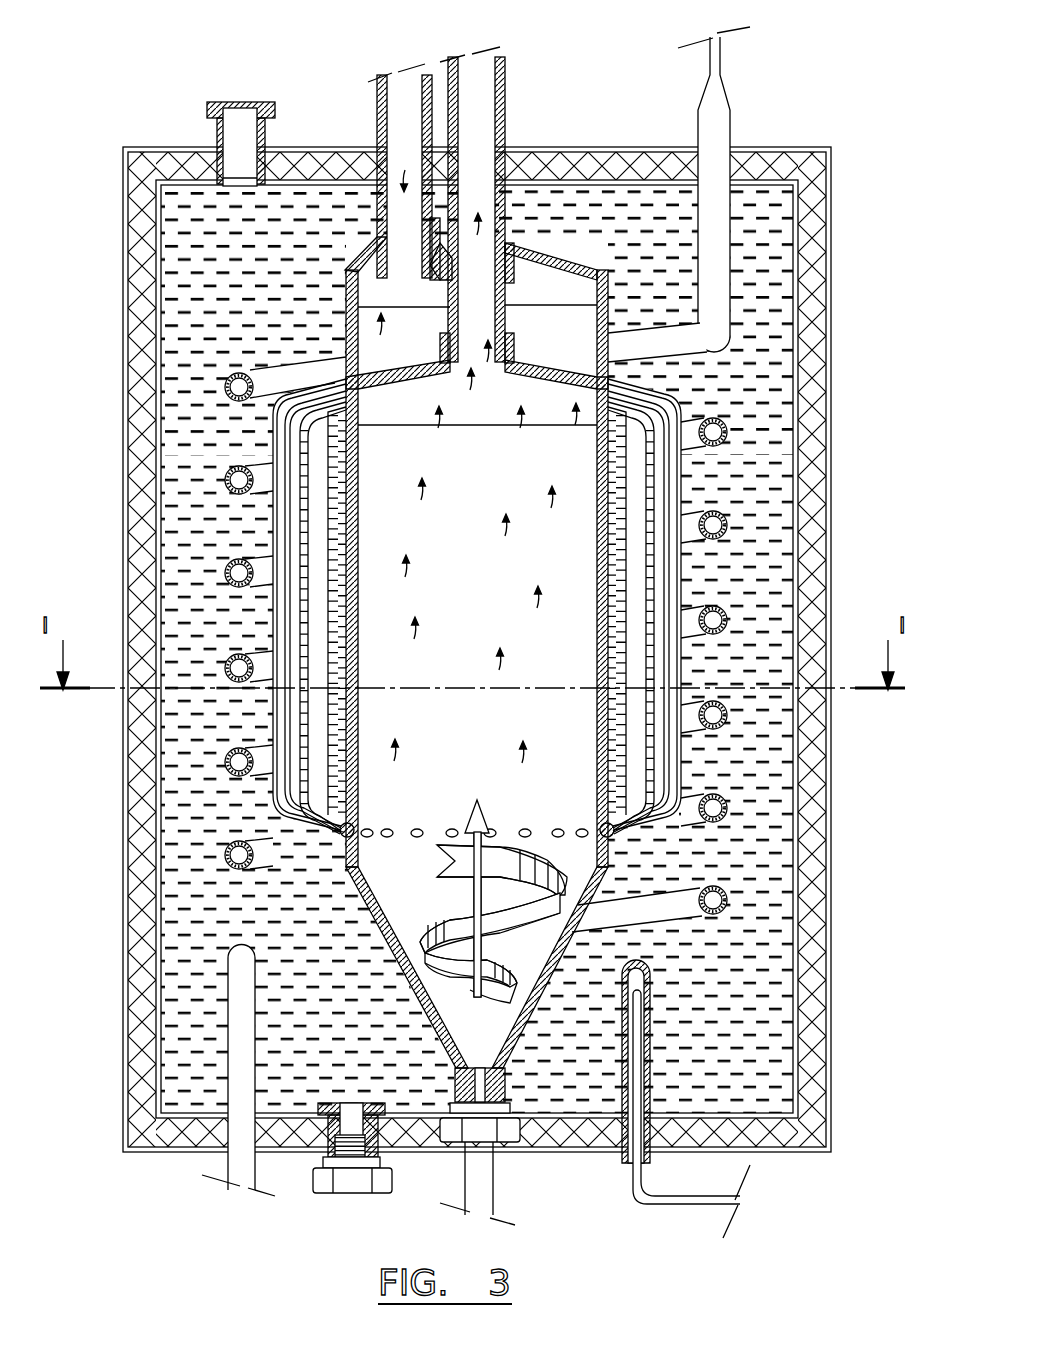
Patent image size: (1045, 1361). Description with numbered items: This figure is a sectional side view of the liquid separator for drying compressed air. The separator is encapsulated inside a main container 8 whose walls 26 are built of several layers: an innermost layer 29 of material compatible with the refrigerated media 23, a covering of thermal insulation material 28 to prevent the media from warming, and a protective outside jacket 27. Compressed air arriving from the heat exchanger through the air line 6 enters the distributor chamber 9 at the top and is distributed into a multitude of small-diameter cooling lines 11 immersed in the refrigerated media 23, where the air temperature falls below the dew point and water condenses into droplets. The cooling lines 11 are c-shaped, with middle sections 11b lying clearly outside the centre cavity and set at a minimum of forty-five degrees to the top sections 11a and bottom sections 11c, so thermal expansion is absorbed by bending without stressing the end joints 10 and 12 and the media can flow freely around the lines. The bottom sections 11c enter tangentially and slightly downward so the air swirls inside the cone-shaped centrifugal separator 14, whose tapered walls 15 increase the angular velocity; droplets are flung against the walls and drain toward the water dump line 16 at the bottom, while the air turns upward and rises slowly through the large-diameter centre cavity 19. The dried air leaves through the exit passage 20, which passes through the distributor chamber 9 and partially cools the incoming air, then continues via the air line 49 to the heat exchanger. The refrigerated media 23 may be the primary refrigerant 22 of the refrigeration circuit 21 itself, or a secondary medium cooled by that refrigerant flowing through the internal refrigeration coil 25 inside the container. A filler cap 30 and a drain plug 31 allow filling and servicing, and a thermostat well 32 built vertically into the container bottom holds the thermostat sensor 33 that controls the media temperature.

The air line 6 is at (397, 87).
The main container 8 is at (438, 629).
The distributor chamber 9 is at (412, 347).
The end joint 10 is at (369, 660).
The cooling lines 11 is at (283, 523).
The top section of cooling lines 11a is at (290, 396).
The middle section of cooling lines 11b is at (287, 725).
The bottom section of cooling lines 11c is at (318, 866).
The end joint 12 is at (355, 832).
The centrifugal separator 14 is at (491, 1032).
The walls 15 is at (380, 910).
The water dump line 16 is at (480, 1183).
The centre cavity 19 is at (491, 595).
The exit passage 20 is at (492, 324).
The refrigeration circuit 21 is at (713, 62).
The primary refrigerant 22 is at (726, 520).
The refrigerated media 23 is at (227, 257).
The internal refrigeration coil 25 is at (556, 627).
The walls 26 is at (438, 649).
The outside jacket 27 is at (126, 1020).
The thermal insulation material 28 is at (134, 1055).
The innermost layer 29 is at (80, 1003).
The filler cap 30 is at (228, 100).
The drain plug 31 is at (352, 1188).
The thermostat well 32 is at (755, 1099).
The thermostat sensor 33 is at (638, 1000).
The air line 49 is at (514, 192).